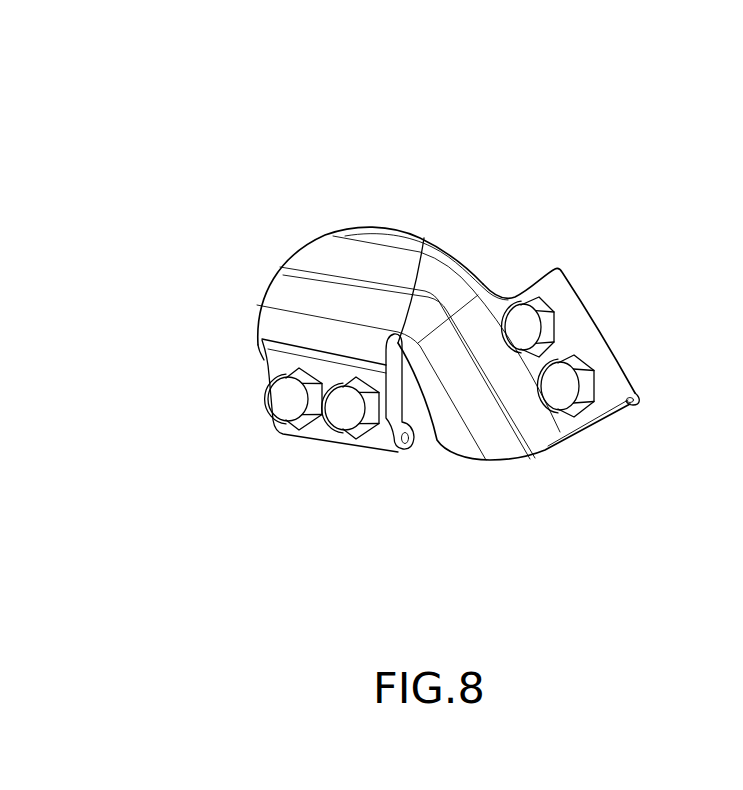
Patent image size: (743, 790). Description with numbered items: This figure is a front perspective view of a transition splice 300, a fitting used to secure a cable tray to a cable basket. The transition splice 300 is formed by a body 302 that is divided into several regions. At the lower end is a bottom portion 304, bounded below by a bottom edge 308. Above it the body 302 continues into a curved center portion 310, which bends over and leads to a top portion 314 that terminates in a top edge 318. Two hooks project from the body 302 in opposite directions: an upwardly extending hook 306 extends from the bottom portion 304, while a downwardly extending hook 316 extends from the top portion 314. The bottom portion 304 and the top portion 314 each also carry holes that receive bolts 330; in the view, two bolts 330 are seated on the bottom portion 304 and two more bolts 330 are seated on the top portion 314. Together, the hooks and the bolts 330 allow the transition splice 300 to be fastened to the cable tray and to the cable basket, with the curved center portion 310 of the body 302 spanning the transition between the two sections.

The transition splice 300 is at (317, 92).
The body 302 is at (262, 308).
The bottom portion 304 is at (347, 445).
The upwardly extending hook 306 is at (402, 437).
The bottom edge 308 is at (432, 428).
The curved center portion 310 is at (303, 282).
The top portion 314 is at (586, 310).
The downwardly extending hook 316 is at (622, 406).
The top edge 318 is at (428, 240).
The bolts 330 is at (292, 402).